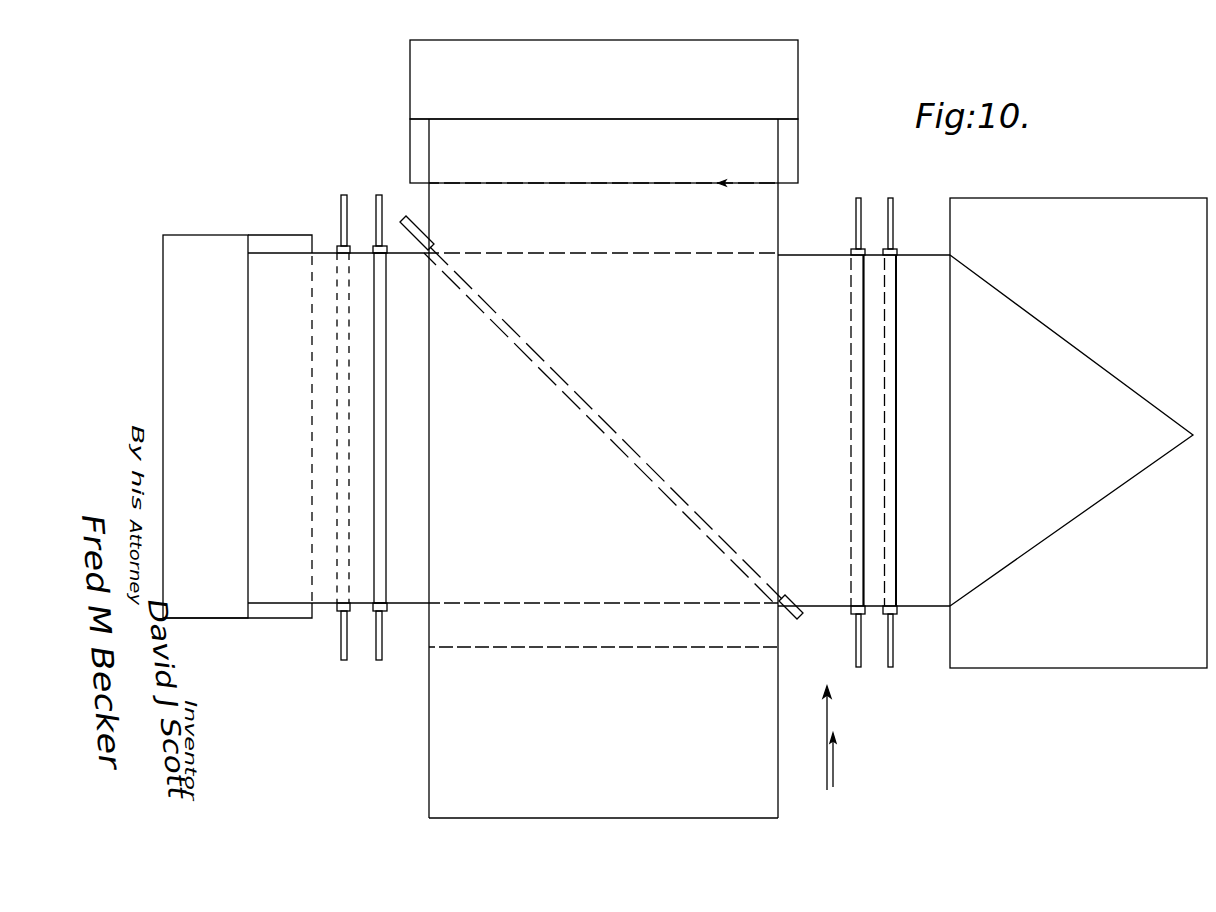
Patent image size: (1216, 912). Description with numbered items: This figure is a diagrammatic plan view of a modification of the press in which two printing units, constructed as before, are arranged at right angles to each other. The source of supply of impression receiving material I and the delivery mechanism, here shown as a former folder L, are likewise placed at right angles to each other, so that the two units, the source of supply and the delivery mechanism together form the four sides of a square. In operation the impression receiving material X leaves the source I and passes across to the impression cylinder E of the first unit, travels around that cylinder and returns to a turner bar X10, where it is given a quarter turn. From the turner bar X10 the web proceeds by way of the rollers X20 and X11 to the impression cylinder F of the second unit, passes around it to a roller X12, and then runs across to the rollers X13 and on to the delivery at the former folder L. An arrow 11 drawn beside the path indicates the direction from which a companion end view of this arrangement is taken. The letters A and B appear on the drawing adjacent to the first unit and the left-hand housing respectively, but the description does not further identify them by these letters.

The upper housing A is at (413, 72).
The impression cylinder E is at (410, 148).
The source of supply of impression receiving material I is at (432, 778).
The left casing B is at (163, 310).
The impression cylinder F is at (272, 620).
The former folder L is at (1088, 512).
The impression receiving material X is at (440, 636).
The turner bar X10 is at (608, 430).
The roller X11 is at (386, 407).
The roller X12 is at (335, 246).
The rollers X13 is at (893, 617).
The roller X20 is at (848, 616).
The arrow 11 is at (844, 738).